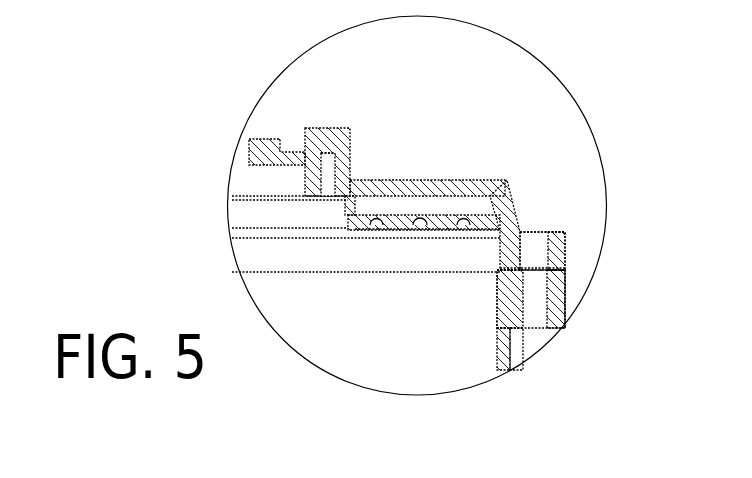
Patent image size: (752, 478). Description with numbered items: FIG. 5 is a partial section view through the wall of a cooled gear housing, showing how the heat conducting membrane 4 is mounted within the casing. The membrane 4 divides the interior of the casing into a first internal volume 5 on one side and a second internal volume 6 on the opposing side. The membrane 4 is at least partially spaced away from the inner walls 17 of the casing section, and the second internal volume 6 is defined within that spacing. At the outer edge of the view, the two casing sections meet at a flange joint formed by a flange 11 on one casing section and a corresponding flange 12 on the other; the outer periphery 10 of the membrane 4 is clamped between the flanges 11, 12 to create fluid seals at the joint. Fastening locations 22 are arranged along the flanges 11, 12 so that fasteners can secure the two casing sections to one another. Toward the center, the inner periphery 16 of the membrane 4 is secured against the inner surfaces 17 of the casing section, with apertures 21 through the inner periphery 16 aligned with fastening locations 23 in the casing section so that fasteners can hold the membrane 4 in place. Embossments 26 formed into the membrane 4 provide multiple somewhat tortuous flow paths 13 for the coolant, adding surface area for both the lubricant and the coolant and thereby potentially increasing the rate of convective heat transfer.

The heat conducting membrane 4 is at (348, 213).
The first internal volume 5 is at (420, 360).
The second internal volume 6 is at (493, 190).
The outer periphery 10 is at (567, 269).
The flange 11 is at (567, 297).
The flange 12 is at (565, 247).
The flow paths 13 is at (405, 222).
The inner periphery 16 is at (307, 194).
The inner walls 17 is at (420, 210).
The apertures 21 is at (323, 198).
The fastening locations 22 is at (537, 236).
The fastening locations 23 is at (325, 168).
The embossments 26 is at (380, 222).